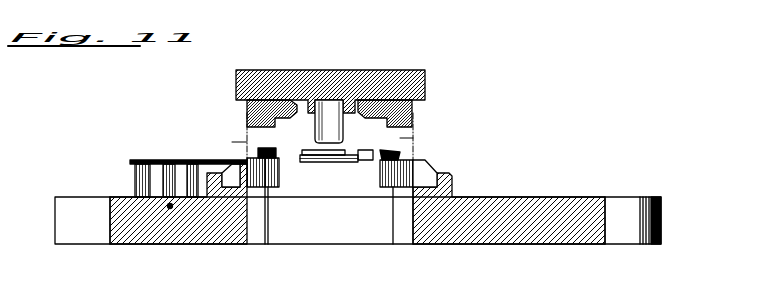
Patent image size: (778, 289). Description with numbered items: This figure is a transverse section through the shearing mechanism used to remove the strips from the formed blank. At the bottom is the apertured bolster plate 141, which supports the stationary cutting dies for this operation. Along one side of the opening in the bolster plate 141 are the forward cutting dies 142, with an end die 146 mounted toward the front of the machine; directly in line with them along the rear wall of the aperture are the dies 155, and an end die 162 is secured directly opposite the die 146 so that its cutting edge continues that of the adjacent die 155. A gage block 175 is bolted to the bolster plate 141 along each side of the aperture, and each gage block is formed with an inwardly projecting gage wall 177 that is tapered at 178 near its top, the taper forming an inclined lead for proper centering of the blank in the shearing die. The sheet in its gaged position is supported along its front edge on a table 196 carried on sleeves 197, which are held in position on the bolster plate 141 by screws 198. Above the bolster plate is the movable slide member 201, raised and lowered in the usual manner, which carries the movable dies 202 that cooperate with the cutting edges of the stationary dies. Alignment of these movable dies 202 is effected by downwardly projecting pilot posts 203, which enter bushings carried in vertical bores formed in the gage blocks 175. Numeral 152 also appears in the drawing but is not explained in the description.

The bolster plate 141 is at (552, 197).
The forward cutting dies 142 is at (235, 168).
The end die 146 is at (272, 172).
The cavity wall 152 is at (250, 228).
The dies 155 is at (425, 171).
The end die 162 is at (384, 181).
The gage block 175 is at (375, 151).
The gage wall 177 is at (326, 163).
The tapered portion 178 is at (343, 151).
The table 196 is at (163, 160).
The sleeves 197 is at (137, 181).
The screws 198 is at (172, 207).
The movable slide member 201 is at (425, 83).
The movable dies 202 is at (247, 113).
The pilot posts 203 is at (315, 131).